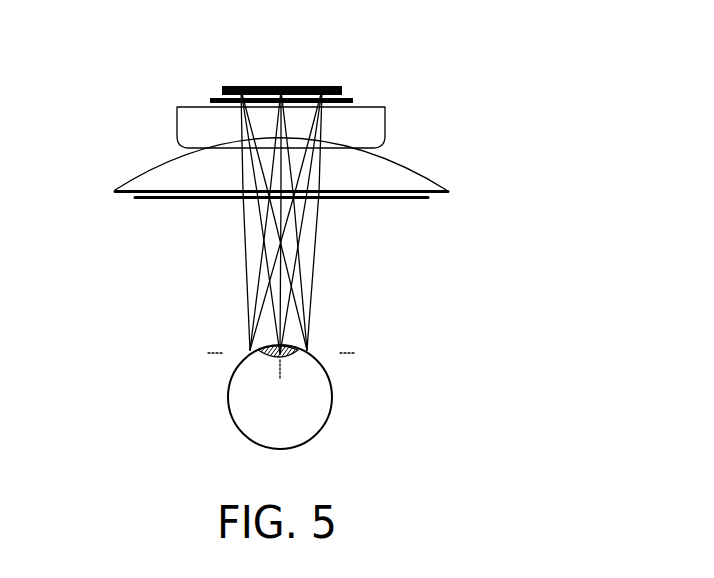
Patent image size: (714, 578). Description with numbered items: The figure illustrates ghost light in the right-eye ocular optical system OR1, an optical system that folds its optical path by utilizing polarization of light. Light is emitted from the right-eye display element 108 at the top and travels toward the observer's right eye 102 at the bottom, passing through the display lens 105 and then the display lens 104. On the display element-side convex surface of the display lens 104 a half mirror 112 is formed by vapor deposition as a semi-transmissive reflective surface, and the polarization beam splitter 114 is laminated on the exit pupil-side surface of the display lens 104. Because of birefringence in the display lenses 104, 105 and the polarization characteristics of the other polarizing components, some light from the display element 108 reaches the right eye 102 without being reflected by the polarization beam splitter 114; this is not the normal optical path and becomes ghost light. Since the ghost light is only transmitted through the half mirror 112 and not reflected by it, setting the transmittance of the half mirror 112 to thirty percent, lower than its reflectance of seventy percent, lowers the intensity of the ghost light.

The right eye 102 is at (295, 400).
The display lens 104 is at (412, 186).
The display lens 105 is at (368, 113).
The right-eye display element 108 is at (336, 88).
The half mirror 112 is at (158, 167).
The polarization beam splitter 114 is at (165, 200).
The right-eye ocular optical system OR1 is at (478, 115).